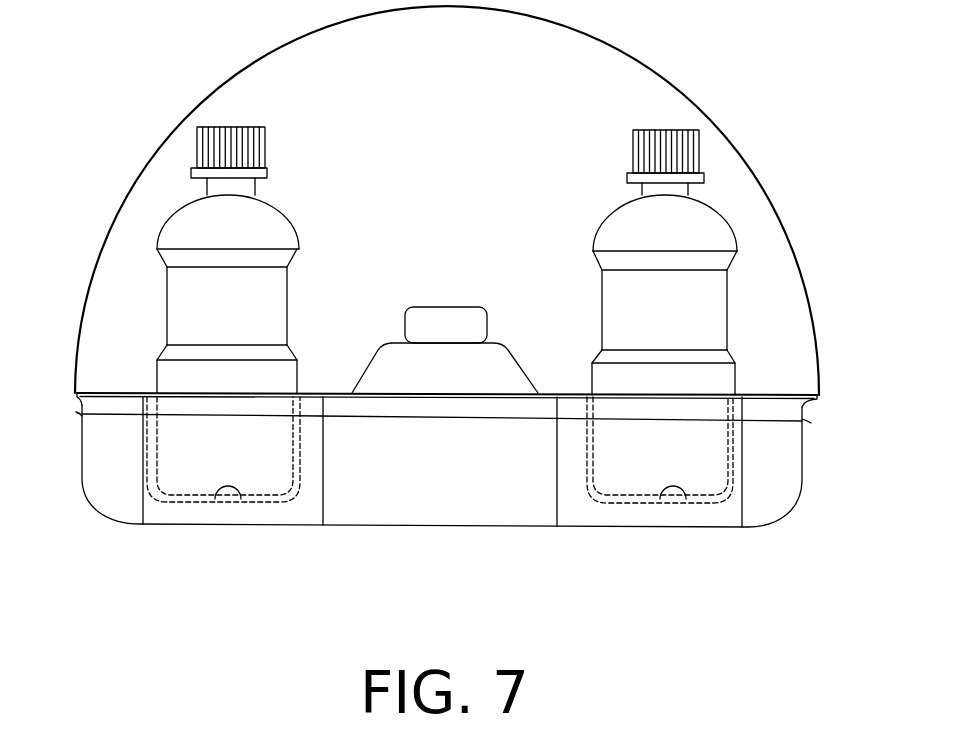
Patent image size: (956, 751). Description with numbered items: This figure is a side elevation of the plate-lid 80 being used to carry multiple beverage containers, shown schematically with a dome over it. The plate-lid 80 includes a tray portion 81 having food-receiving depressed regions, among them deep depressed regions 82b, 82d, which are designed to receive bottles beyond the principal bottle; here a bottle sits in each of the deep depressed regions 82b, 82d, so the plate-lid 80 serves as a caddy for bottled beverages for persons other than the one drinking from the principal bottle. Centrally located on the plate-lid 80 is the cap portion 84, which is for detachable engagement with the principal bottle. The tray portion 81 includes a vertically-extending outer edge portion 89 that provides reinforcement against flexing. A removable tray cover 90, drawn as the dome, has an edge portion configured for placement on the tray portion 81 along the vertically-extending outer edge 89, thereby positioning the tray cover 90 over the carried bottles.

The plate-lid 80 is at (128, 515).
The tray portion 81 is at (105, 462).
The deep depressed region 82b is at (239, 498).
The deep depressed region 82d is at (688, 502).
The cap portion 84 is at (487, 323).
The vertically-extending outer edge portion 89 is at (803, 468).
The tray cover 90 is at (777, 195).